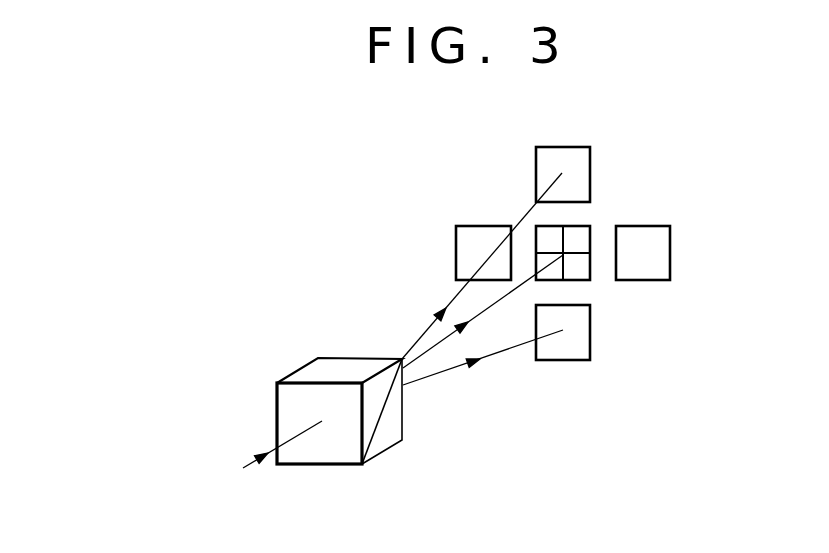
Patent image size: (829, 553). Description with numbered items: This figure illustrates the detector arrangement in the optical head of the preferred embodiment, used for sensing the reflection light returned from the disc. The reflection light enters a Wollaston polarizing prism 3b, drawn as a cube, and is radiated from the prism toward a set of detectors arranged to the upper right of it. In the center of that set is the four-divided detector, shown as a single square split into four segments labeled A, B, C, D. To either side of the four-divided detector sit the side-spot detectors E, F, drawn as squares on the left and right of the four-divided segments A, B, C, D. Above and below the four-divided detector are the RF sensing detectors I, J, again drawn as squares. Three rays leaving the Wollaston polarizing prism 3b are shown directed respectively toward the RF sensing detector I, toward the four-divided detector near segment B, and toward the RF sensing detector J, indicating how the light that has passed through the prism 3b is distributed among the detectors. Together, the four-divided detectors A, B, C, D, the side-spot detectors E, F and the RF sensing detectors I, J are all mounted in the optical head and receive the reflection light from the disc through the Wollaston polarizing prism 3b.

The Wollaston polarizing prism 3b is at (395, 420).
The RF sensing detector I is at (563, 174).
The side-spot detector E is at (483, 254).
The four-divided detector segment A is at (549, 241).
The four-divided detector segment B is at (549, 268).
The four-divided detector segment C is at (576, 268).
The four-divided detector segment D is at (576, 241).
The side-spot detector F is at (643, 254).
The RF sensing detector J is at (563, 332).